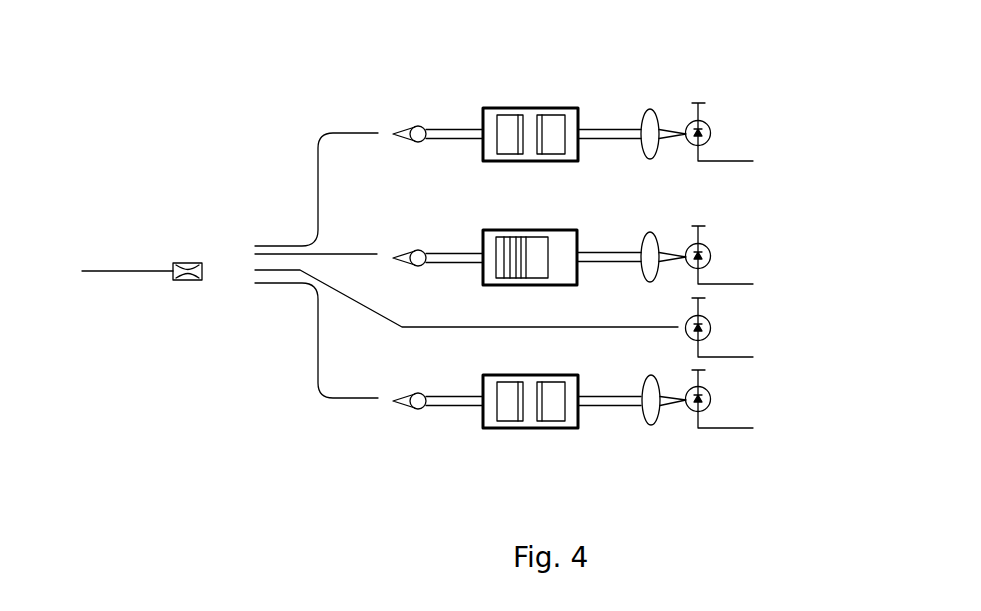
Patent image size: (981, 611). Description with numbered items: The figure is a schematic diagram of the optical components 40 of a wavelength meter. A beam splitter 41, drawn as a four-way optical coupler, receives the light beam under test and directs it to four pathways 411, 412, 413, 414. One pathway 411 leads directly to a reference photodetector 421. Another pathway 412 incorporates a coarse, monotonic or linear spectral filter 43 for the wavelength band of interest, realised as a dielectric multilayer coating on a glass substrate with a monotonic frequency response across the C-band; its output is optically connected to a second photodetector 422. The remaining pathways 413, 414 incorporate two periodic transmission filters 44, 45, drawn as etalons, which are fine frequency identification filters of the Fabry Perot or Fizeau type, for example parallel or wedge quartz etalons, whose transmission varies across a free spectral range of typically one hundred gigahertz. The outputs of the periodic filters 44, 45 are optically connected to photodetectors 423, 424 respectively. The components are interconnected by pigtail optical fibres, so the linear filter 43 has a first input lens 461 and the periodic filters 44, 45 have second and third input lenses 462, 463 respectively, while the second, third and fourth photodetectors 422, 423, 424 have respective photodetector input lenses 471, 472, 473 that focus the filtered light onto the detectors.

The optical components 40 is at (240, 98).
The beam splitter 41 is at (194, 280).
The pathway 411 is at (347, 302).
The pathway 412 is at (362, 253).
The pathway 413 is at (345, 132).
The pathway 414 is at (348, 398).
The linear spectral filter 43 is at (578, 286).
The periodic transmission filter 44 is at (498, 108).
The periodic transmission filter 45 is at (492, 429).
The first input lens 461 is at (423, 266).
The second input lens 462 is at (423, 409).
The third input lens 463 is at (423, 142).
The photodetector input lens 471 is at (647, 233).
The photodetector input lens 472 is at (647, 110).
The photodetector input lens 473 is at (652, 424).
The reference photodetector 421 is at (712, 323).
The second photodetector 422 is at (707, 242).
The photodetector 423 is at (712, 122).
The photodetector 424 is at (712, 399).